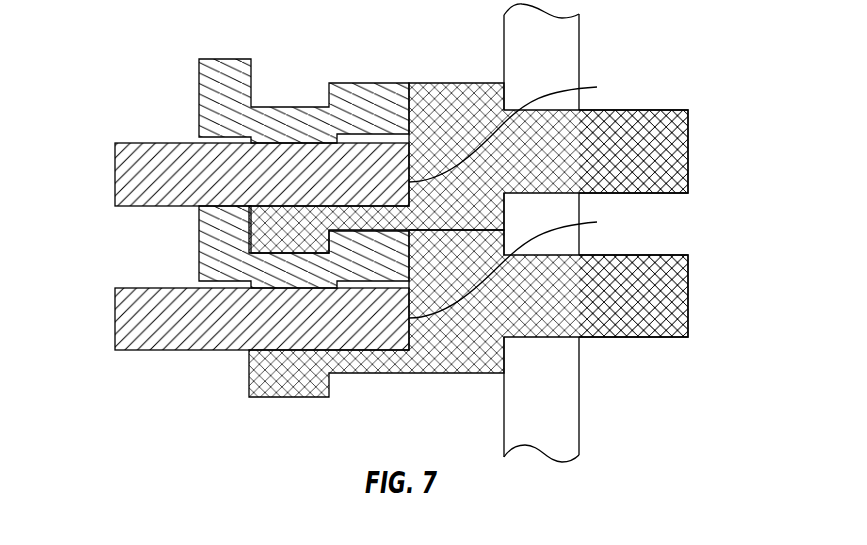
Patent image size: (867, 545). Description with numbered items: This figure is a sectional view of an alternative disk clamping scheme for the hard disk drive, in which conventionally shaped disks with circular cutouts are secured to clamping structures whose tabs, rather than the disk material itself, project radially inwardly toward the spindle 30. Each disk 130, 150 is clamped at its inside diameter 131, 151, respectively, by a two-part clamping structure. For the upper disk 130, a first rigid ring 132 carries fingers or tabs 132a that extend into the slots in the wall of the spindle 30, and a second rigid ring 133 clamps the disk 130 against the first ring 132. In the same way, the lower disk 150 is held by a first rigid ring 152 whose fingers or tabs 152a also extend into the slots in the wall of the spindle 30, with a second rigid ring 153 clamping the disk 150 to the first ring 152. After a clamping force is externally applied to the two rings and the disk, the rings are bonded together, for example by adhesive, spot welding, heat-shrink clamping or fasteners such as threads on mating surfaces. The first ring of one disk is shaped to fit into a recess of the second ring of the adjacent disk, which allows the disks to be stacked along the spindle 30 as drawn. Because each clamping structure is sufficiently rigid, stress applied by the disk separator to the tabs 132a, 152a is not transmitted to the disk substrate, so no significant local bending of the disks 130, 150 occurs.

The spindle 30 is at (572, 53).
The disk 130 is at (126, 176).
The inside diameter 131 is at (524, 127).
The first rigid ring 132 is at (468, 92).
The fingers or tabs 132a is at (678, 157).
The second rigid ring 133 is at (212, 92).
The disk 150 is at (126, 321).
The inside diameter 151 is at (524, 263).
The first rigid ring 152 is at (468, 360).
The fingers or tabs 152a is at (678, 299).
The second rigid ring 153 is at (210, 244).